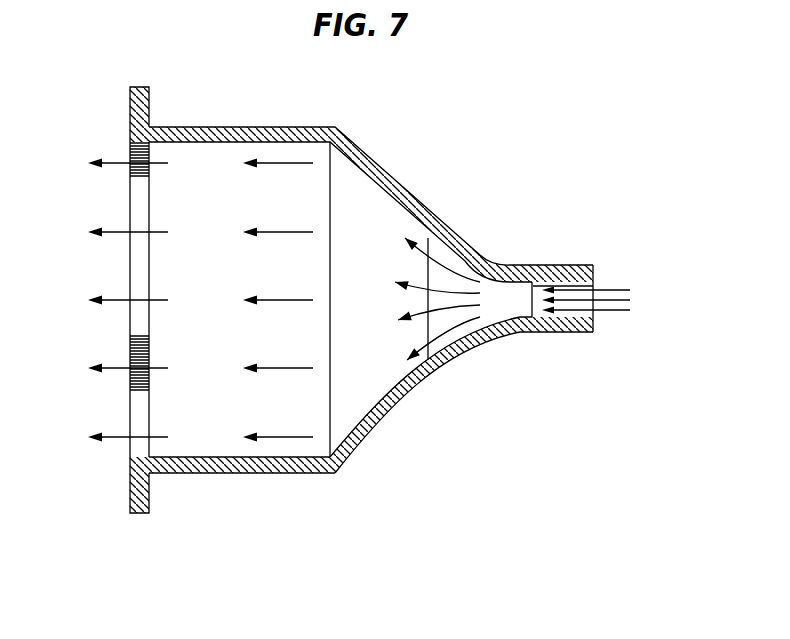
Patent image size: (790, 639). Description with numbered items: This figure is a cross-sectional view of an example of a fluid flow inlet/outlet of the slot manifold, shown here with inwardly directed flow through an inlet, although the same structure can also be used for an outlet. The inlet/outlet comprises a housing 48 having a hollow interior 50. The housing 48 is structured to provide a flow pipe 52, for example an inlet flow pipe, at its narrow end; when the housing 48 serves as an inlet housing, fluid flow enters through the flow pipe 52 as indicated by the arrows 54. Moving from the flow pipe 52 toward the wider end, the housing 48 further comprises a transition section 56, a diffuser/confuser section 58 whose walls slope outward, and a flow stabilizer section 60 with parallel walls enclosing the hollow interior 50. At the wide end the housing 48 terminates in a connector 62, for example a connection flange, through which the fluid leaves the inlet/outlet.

The housing 48 is at (298, 127).
The hollow interior 50 is at (218, 278).
The flow pipe 52 is at (577, 334).
The arrows 54 is at (615, 290).
The transition section 56 is at (477, 345).
The diffuser/confuser section 58 is at (377, 432).
The flow stabilizer section 60 is at (262, 473).
The connector 62 is at (130, 492).